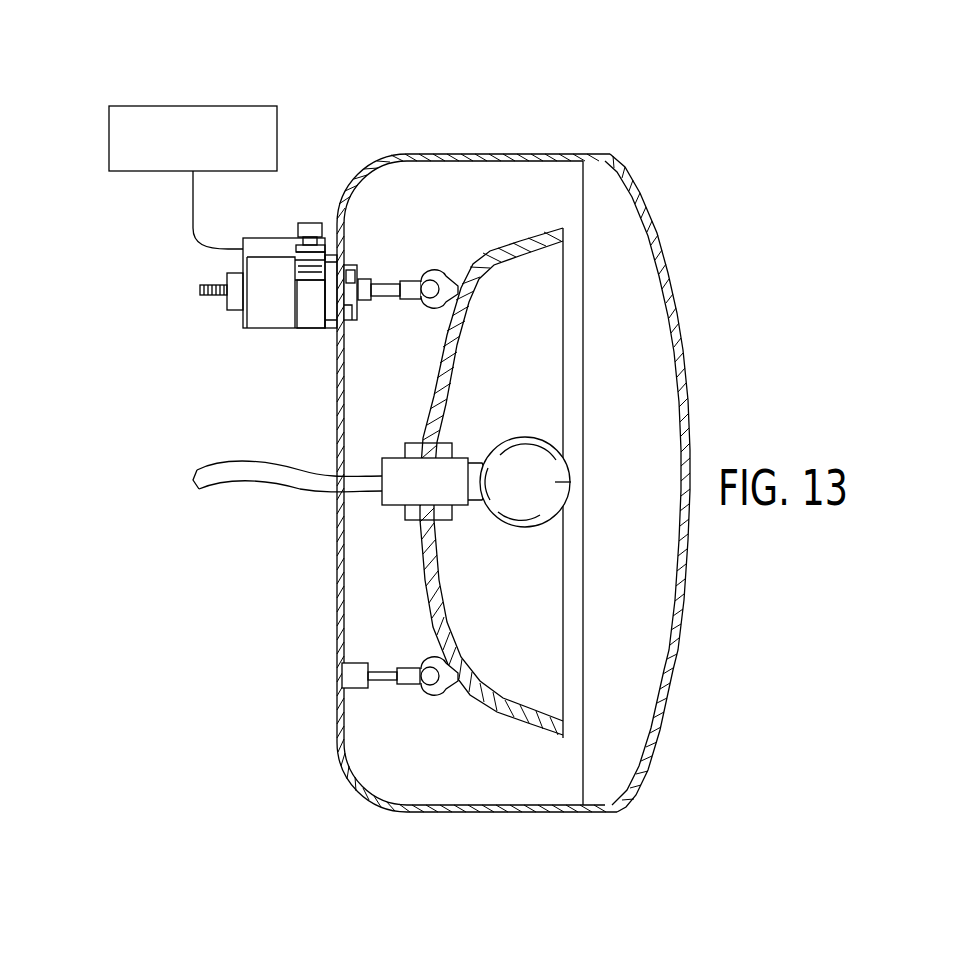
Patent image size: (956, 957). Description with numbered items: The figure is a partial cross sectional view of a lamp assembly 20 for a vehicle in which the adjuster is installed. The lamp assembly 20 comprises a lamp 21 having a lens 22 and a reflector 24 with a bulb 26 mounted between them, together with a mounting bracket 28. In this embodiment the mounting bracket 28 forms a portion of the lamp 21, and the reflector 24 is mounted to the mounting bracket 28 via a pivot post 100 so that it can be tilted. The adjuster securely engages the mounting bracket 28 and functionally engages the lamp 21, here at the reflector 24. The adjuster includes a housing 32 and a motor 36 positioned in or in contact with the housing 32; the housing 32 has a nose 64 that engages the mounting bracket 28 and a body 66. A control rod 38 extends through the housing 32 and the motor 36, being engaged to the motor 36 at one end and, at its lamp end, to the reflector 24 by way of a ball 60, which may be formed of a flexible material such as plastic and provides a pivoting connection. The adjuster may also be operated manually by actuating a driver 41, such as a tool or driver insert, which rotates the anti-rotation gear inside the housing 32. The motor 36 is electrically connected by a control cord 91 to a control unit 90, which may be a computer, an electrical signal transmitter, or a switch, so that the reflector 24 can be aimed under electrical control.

The lamp assembly 20 is at (797, 198).
The lamp 21 is at (689, 377).
The lens 22 is at (673, 272).
The reflector 24 is at (511, 243).
The bulb 26 is at (557, 488).
The mounting bracket 28 is at (425, 154).
The housing 32 is at (315, 332).
The motor 36 is at (248, 333).
The control rod 38 is at (378, 283).
The driver 41 is at (305, 222).
The ball 60 is at (432, 282).
The nose 64 is at (350, 265).
The body 66 is at (302, 324).
The control unit 90 is at (155, 103).
The control cord 91 is at (187, 206).
The pivot post 100 is at (348, 675).